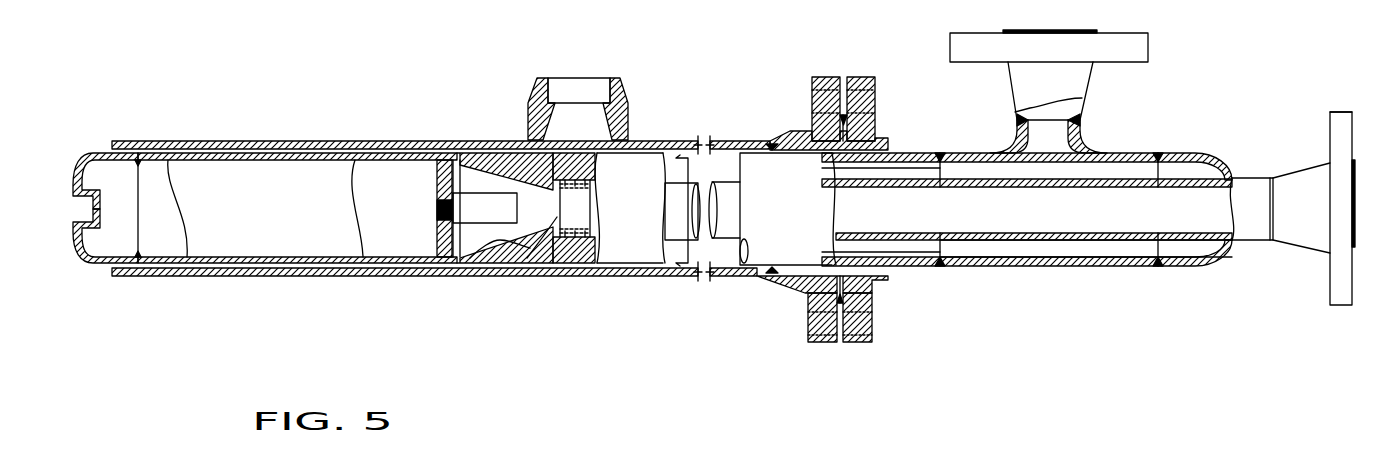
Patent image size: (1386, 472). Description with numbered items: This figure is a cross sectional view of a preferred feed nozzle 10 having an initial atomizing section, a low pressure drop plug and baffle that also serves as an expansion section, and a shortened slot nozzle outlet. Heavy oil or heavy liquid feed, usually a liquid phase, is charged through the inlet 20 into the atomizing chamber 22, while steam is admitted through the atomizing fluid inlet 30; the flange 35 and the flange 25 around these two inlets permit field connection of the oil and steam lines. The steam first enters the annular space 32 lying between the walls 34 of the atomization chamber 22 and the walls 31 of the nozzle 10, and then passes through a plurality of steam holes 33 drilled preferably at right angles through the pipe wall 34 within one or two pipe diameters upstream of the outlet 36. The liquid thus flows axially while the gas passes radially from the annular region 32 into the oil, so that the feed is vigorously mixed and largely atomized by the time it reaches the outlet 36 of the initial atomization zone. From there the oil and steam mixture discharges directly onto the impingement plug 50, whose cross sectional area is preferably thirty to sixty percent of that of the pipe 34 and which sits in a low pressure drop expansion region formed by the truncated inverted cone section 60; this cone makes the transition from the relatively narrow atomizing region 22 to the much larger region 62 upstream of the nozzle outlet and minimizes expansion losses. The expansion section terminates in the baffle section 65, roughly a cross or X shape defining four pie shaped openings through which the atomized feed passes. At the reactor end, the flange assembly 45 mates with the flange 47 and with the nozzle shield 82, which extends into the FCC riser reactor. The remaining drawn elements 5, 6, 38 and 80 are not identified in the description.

The nut 5 is at (578, 77).
The end cap 6 is at (110, 148).
The nozzle 10 is at (899, 268).
The inlet 20 is at (1355, 250).
The atomizing chamber 22 is at (1037, 223).
The flange 25 is at (1352, 112).
The atomizing fluid inlet 30 is at (1062, 30).
The walls of nozzle 31 is at (1010, 263).
The annular space 32 is at (1073, 248).
The steam holes 33 is at (573, 263).
The pipe wall 34 is at (1130, 241).
The flange 35 is at (1150, 48).
The outlet 36 is at (518, 242).
The tapered wedge 38 is at (462, 165).
The flange assembly 45 is at (852, 343).
The flange 47 is at (823, 343).
The impingement plug 50 is at (506, 193).
The truncated inverted cone section 60 is at (490, 242).
The region upstream of nozzle outlet 62 is at (412, 243).
The baffle section 65 is at (440, 250).
The end cap lower 80 is at (83, 254).
The nozzle shield 82 is at (218, 142).